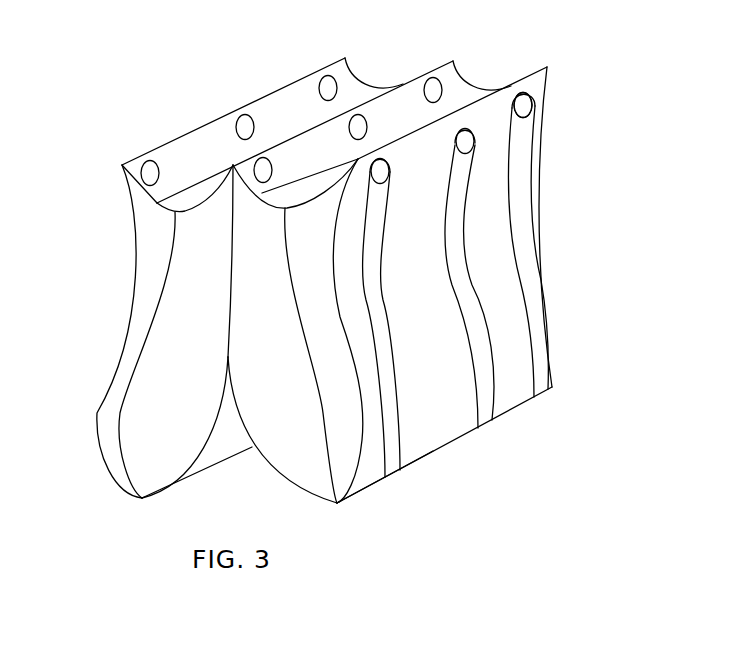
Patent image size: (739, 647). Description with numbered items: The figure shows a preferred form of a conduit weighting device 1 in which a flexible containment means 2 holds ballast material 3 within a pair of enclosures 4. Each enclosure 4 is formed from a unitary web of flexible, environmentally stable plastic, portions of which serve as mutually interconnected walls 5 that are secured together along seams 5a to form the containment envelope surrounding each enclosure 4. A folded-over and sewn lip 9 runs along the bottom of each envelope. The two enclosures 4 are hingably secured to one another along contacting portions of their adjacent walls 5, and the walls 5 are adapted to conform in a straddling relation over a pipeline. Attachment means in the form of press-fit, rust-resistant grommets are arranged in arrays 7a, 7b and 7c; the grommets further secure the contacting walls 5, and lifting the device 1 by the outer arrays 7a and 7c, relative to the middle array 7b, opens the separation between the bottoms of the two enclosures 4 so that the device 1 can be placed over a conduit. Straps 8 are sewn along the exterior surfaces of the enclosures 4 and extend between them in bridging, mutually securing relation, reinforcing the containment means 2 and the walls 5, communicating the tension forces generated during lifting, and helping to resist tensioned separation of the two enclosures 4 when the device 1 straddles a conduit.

The conduit weighting device 1 is at (253, 103).
The containment means 2 is at (132, 242).
The ballast material 3 is at (190, 192).
The enclosures 4 is at (352, 90).
The walls 5 is at (143, 283).
The seams 5a is at (132, 363).
The array of attachment means grommets 7a is at (534, 102).
The array of attachment means grommets 7b is at (433, 77).
The array of attachment means grommets 7c is at (331, 76).
The straps 8 is at (392, 465).
The folded-over and sewn lip 9 is at (142, 498).